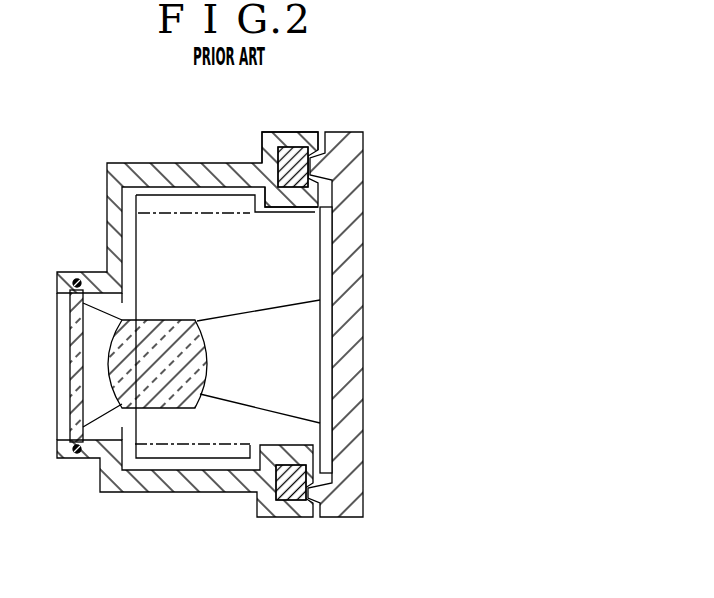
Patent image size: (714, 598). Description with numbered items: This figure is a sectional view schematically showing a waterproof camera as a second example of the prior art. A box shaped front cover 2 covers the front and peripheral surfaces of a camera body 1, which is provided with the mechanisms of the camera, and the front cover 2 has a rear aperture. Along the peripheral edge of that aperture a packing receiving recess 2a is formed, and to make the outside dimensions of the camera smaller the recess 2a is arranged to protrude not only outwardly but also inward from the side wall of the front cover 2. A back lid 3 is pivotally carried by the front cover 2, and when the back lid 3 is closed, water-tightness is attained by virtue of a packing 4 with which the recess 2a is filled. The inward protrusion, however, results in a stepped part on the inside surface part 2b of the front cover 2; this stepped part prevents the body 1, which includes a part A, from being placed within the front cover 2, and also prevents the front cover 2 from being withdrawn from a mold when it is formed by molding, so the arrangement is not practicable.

The camera body 1 is at (172, 230).
The front cover 2 is at (123, 172).
The packing receiving recess 2a is at (286, 133).
The inside surface part 2b is at (242, 215).
The back lid 3 is at (355, 147).
The packing 4 is at (294, 150).
The part A is at (191, 214).